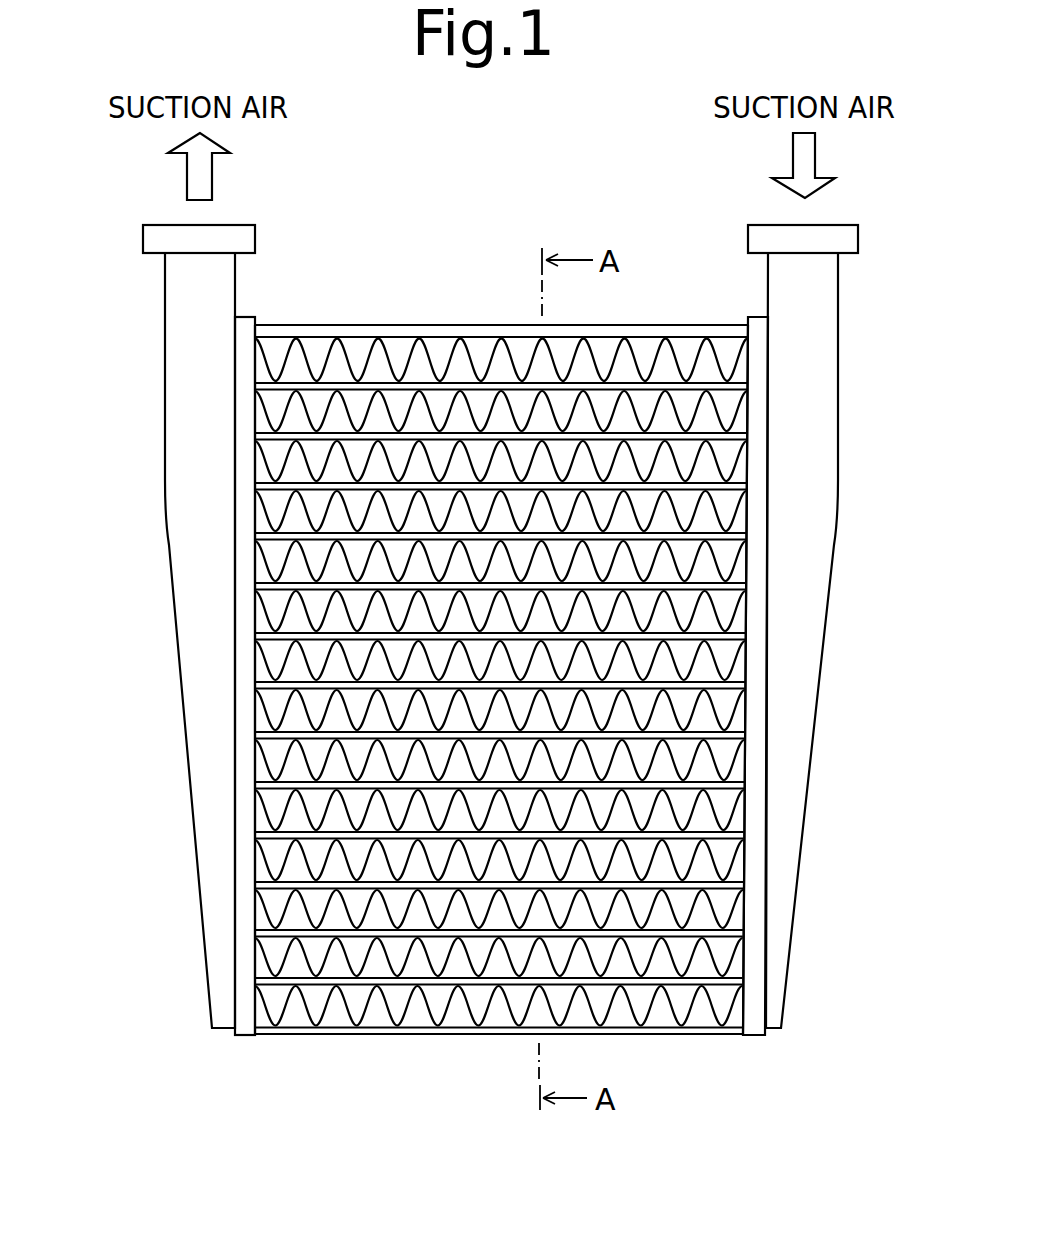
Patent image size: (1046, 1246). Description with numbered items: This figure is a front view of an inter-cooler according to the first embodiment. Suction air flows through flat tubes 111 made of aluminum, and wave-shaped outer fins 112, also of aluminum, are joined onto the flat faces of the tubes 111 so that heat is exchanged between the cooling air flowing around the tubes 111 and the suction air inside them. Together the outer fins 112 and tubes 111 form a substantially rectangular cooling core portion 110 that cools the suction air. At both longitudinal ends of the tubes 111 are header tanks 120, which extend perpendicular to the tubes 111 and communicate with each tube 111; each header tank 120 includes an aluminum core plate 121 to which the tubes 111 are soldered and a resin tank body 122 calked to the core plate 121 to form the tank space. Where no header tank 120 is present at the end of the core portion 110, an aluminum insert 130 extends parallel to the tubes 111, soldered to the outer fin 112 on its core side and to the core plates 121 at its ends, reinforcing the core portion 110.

The cooling core portion 110 is at (504, 671).
The flat tube 111 is at (703, 383).
The wave-shaped outer fin 112 is at (705, 356).
The header tank 120 is at (496, 630).
The core plate 121 is at (242, 786).
The tank body 122 is at (173, 611).
The insert 130 is at (688, 325).